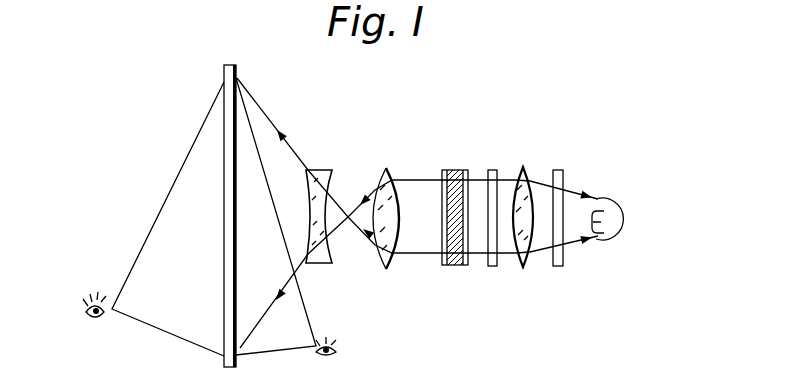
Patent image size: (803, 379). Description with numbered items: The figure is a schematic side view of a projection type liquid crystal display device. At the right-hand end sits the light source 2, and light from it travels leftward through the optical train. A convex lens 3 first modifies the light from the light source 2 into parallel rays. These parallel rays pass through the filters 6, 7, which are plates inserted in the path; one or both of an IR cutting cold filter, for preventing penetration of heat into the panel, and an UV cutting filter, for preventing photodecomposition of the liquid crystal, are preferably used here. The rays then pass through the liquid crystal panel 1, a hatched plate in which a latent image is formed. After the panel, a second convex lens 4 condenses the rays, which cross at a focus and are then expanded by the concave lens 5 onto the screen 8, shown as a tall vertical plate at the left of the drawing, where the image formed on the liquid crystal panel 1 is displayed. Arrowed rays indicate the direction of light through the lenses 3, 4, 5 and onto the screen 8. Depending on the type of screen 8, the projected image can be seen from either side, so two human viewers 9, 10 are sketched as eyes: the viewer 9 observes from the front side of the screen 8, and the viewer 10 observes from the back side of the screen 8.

The liquid crystal panel 1 is at (452, 169).
The light source 2 is at (608, 196).
The convex lens 3 is at (524, 167).
The convex lens 4 is at (389, 168).
The concave lens 5 is at (321, 169).
The filter 6 is at (559, 169).
The filter 7 is at (491, 169).
The screen 8 is at (238, 70).
The human viewer 9 is at (337, 352).
The human viewer 10 is at (97, 321).